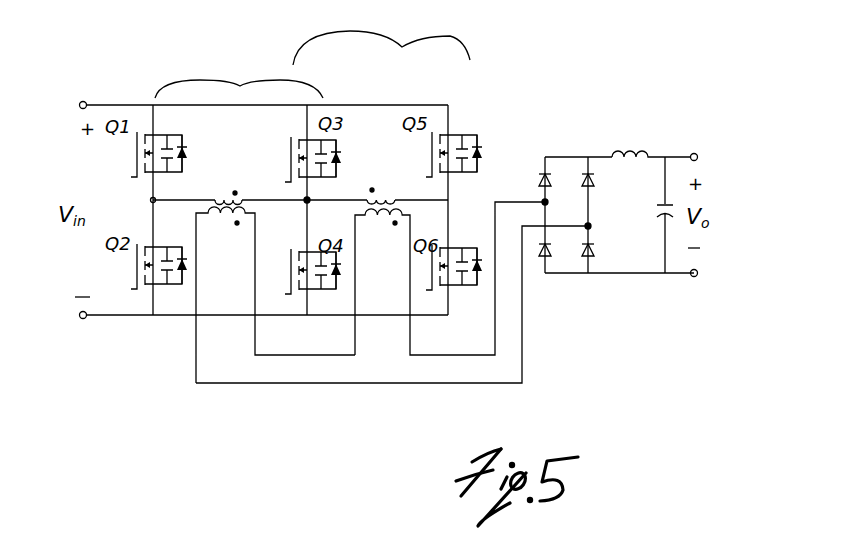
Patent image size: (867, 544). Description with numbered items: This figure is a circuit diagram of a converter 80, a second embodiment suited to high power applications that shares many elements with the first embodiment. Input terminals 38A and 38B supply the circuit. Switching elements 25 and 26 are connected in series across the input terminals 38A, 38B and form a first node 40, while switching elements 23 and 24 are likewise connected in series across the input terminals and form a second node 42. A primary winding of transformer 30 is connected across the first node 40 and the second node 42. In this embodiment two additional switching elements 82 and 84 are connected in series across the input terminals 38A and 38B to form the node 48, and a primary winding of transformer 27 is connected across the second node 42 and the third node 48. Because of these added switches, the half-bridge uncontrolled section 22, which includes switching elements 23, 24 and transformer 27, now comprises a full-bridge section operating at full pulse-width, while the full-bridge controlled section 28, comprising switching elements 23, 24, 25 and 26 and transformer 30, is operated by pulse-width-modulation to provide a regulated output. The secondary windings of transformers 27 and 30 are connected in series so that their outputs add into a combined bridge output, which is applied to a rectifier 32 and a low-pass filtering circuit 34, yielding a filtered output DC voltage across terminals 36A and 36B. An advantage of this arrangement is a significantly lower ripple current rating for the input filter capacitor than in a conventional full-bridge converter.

The converter 80 is at (70, 60).
The input terminal 38A is at (86, 100).
The input terminal 38B is at (82, 319).
The switching element 82 is at (137, 152).
The switching element 84 is at (137, 266).
The half-bridge uncontrolled section 22 is at (239, 79).
The full-bridge controlled section 28 is at (381, 40).
The switching element 23 is at (289, 150).
The switching element 24 is at (289, 262).
The switching element 25 is at (453, 134).
The switching element 26 is at (450, 250).
The transformer 27 is at (203, 214).
The transformer 30 is at (362, 216).
The rectifier 32 is at (580, 137).
The filtering circuit 34 is at (674, 137).
The terminal 36A is at (695, 153).
The terminal 36B is at (698, 274).
The first node 40 is at (450, 200).
The second node 42 is at (310, 200).
The third node 48 is at (156, 200).